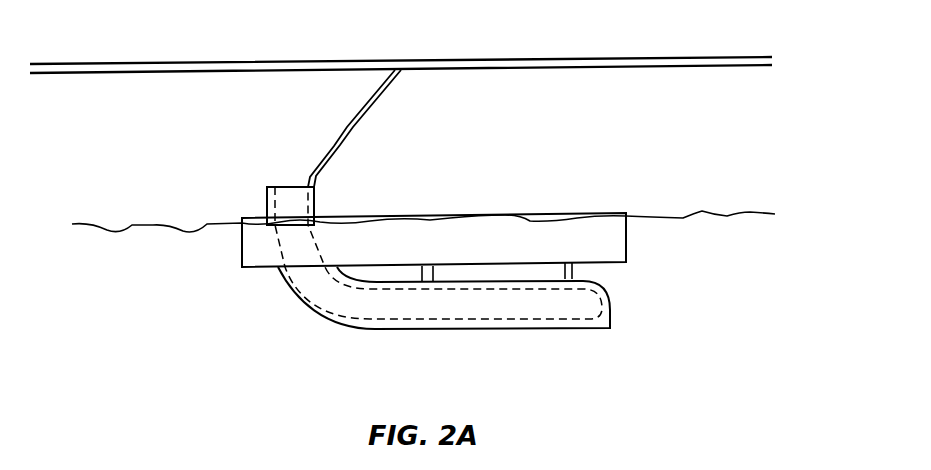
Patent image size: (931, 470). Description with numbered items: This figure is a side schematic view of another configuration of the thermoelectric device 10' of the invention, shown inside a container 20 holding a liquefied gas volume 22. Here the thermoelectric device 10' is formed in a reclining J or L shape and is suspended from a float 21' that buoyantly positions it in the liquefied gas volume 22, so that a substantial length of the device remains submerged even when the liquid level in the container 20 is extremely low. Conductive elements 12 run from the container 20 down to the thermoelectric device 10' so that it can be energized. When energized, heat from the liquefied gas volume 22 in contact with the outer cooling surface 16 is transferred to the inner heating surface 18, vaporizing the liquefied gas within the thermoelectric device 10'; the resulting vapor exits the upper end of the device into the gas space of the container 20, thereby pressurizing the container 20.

The container 20 is at (452, 60).
The conductive elements 12 is at (390, 87).
The thermoelectric device 10' is at (348, 192).
The float 21' is at (434, 219).
The liquefied gas volume 22 is at (696, 287).
The heating surface 18 is at (352, 283).
The cooling surface 16 is at (505, 328).